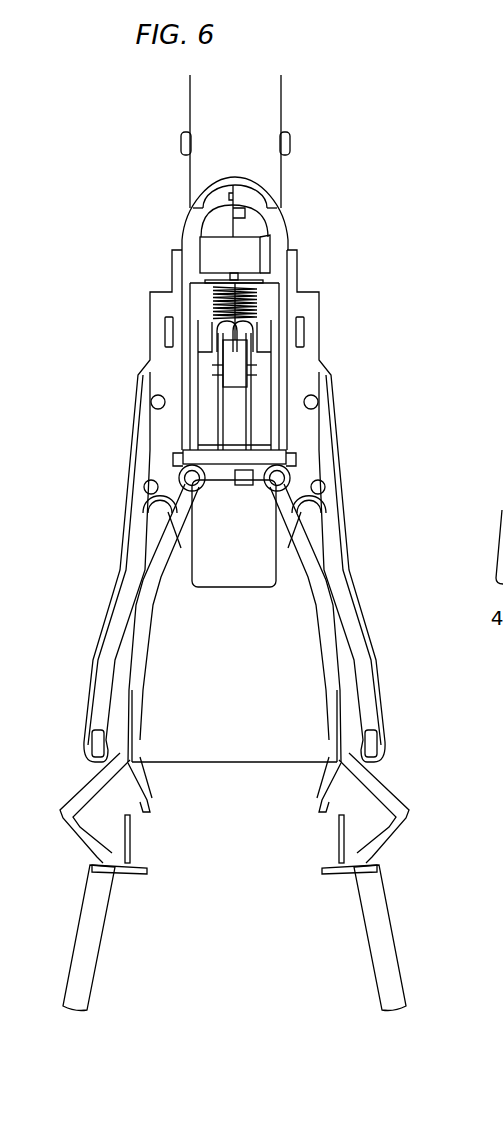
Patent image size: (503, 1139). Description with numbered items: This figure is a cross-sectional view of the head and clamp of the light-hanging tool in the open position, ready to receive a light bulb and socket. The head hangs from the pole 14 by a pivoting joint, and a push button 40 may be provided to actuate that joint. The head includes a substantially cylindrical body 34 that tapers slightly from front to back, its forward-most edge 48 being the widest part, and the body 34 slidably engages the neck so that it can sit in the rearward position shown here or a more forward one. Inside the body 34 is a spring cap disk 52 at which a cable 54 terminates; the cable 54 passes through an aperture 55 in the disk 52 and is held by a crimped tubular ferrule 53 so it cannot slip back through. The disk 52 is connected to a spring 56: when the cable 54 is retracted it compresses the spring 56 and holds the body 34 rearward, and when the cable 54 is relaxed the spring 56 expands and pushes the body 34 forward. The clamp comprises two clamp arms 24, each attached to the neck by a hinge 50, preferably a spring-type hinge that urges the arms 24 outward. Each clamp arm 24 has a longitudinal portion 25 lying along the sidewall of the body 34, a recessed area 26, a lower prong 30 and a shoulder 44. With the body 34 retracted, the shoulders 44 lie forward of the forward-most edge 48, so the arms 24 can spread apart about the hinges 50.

The pole 14 is at (190, 87).
The push button 40 is at (181, 146).
The clamp arm 24 is at (422, 884).
The longitudinal portion 25 is at (140, 641).
The recessed area 26 is at (131, 834).
The lower prong 30 is at (78, 998).
The body 34 is at (117, 588).
The shoulder 44 is at (57, 815).
The forward-most edge 48 is at (242, 764).
The hinge 50 is at (200, 482).
The spring cap disk 52 is at (300, 331).
The crimped tubular ferrule 53 is at (234, 384).
The cable 54 is at (264, 236).
The aperture 55 is at (254, 325).
The spring 56 is at (214, 296).